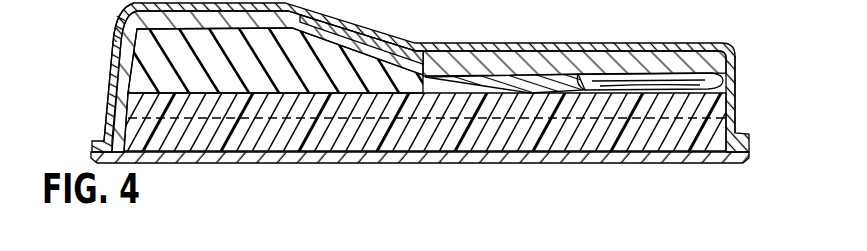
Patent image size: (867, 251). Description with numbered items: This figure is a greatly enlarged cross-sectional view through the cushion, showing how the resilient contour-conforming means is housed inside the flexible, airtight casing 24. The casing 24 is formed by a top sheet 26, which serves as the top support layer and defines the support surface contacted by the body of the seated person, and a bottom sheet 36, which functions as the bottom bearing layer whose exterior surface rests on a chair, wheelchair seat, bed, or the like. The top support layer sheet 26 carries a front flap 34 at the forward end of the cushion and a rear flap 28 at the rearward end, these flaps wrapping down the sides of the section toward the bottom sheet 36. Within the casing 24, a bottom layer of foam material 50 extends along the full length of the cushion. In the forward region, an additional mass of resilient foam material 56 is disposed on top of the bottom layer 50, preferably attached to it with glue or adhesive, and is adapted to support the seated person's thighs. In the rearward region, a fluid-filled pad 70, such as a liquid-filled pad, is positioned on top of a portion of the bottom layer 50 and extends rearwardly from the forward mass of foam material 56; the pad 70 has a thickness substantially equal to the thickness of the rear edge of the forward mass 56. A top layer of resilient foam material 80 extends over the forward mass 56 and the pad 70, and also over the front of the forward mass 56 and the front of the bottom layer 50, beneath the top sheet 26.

The casing 24 is at (727, 41).
The top sheet 26 is at (443, 46).
The rear flap 28 is at (735, 101).
The front flap 34 is at (104, 103).
The bottom sheet 36 is at (688, 154).
The bottom layer of foam material 50 is at (717, 131).
The additional mass of foam material 56 is at (333, 46).
The fluid-filled pad 70 is at (594, 84).
The top layer of foam material 80 is at (522, 60).